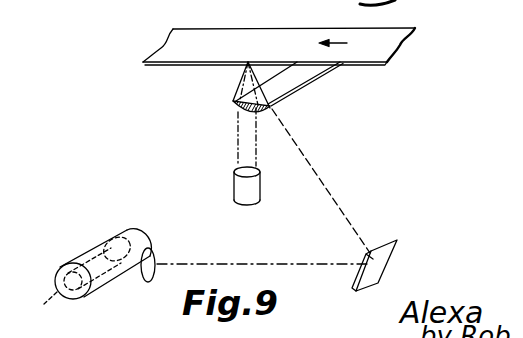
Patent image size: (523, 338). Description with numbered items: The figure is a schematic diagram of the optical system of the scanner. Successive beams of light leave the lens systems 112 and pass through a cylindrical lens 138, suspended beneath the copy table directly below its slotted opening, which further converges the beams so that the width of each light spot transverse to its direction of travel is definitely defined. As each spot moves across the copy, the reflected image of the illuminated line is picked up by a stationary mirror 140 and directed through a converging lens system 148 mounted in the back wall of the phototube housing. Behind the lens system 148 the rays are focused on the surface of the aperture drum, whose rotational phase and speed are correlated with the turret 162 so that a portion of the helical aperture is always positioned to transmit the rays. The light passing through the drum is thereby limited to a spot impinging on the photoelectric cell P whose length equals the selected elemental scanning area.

The lens systems 112 is at (258, 197).
The cylindrical lens 138 is at (227, 102).
The stationary mirror 140 is at (387, 239).
The converging lens system 148 is at (153, 258).
The turret 162 is at (112, 229).
The photoelectric cell P is at (42, 307).